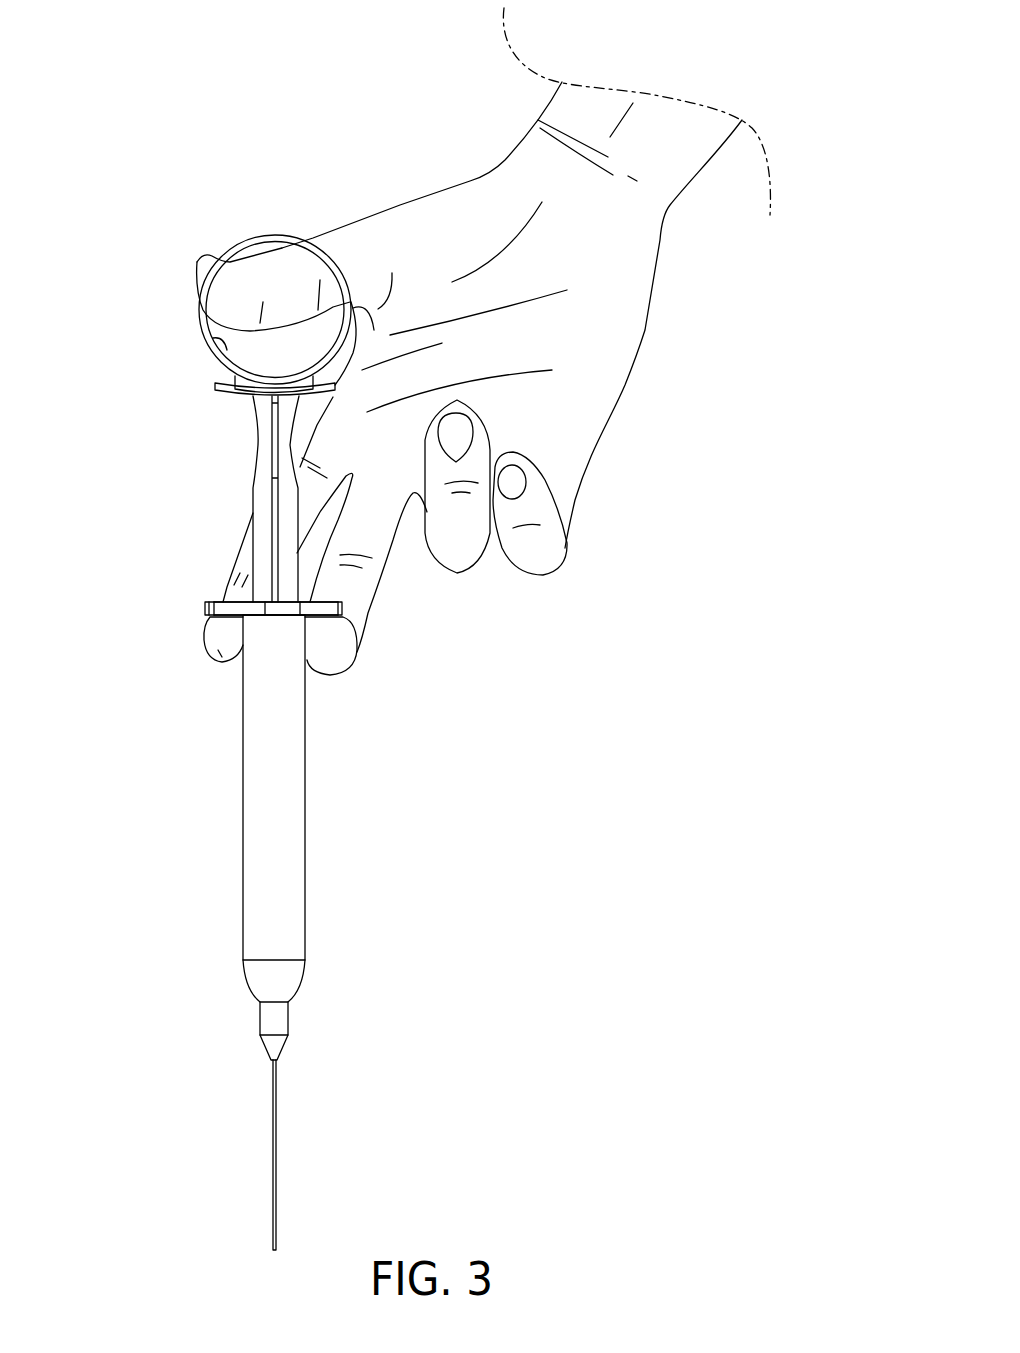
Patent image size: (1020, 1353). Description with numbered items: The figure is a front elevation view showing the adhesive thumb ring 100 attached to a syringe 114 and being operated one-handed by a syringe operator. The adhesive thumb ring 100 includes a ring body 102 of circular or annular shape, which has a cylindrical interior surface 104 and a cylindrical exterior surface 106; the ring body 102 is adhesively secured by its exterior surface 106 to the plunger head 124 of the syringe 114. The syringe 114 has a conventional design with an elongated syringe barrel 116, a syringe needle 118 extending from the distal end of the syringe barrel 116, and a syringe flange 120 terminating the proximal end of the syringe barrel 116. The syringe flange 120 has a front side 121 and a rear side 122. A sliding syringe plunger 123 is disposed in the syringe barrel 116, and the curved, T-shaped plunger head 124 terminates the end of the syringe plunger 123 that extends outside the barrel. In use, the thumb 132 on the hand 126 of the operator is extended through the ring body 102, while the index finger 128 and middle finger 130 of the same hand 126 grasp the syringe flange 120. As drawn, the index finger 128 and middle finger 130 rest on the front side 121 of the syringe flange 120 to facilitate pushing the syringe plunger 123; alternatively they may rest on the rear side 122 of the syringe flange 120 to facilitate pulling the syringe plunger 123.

The adhesive thumb ring 100 is at (247, 200).
The ring body 102 is at (277, 235).
The interior surface 104 is at (222, 340).
The exterior surface 106 is at (240, 245).
The syringe 114 is at (228, 932).
The syringe barrel 116 is at (257, 745).
The syringe needle 118 is at (278, 1118).
The syringe flange 120 is at (205, 607).
The front side 121 is at (238, 620).
The rear side 122 is at (226, 602).
The syringe plunger 123 is at (255, 447).
The plunger head 124 is at (228, 391).
The hand 126 is at (641, 345).
The index finger 128 is at (222, 650).
The middle finger 130 is at (338, 654).
The thumb 132 is at (205, 287).